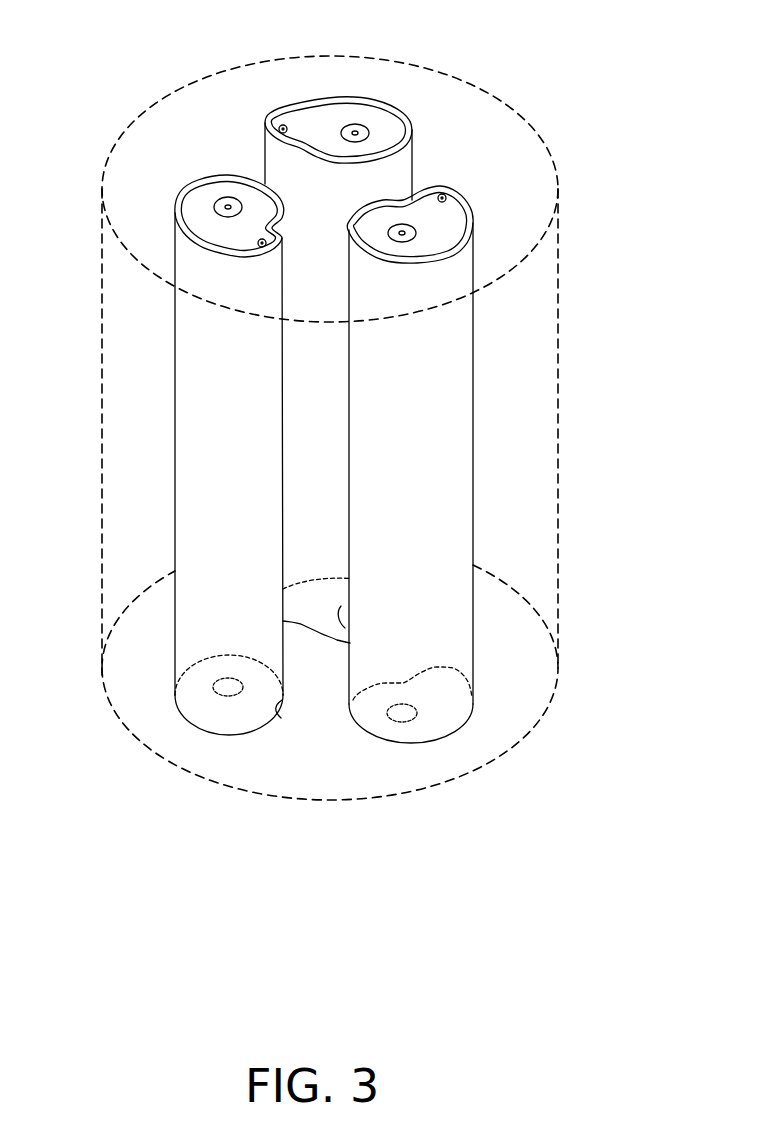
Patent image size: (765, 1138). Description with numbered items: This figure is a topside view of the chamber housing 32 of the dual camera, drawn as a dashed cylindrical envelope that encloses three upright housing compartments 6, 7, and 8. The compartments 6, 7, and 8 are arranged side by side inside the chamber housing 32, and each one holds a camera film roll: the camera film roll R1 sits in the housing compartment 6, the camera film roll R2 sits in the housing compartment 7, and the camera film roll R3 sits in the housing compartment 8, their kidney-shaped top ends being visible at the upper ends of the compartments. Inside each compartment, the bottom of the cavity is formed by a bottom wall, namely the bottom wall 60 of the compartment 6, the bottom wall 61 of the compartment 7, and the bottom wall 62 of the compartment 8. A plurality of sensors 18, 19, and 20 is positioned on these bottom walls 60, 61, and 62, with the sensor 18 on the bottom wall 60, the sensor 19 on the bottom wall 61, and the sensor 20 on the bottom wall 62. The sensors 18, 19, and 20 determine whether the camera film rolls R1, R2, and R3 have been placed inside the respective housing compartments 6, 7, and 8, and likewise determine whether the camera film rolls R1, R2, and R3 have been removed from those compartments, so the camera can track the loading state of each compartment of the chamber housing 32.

The chamber housing 32 is at (546, 47).
The housing compartment 6 is at (159, 512).
The housing compartment 7 is at (308, 437).
The housing compartment 8 is at (481, 511).
The camera film roll R1 is at (200, 198).
The camera film roll R2 is at (303, 117).
The camera film roll R3 is at (452, 213).
The sensor 18 is at (228, 690).
The sensor 19 is at (347, 610).
The sensor 20 is at (403, 718).
The bottom wall 60 is at (193, 702).
The bottom wall 61 is at (307, 614).
The bottom wall 62 is at (442, 722).